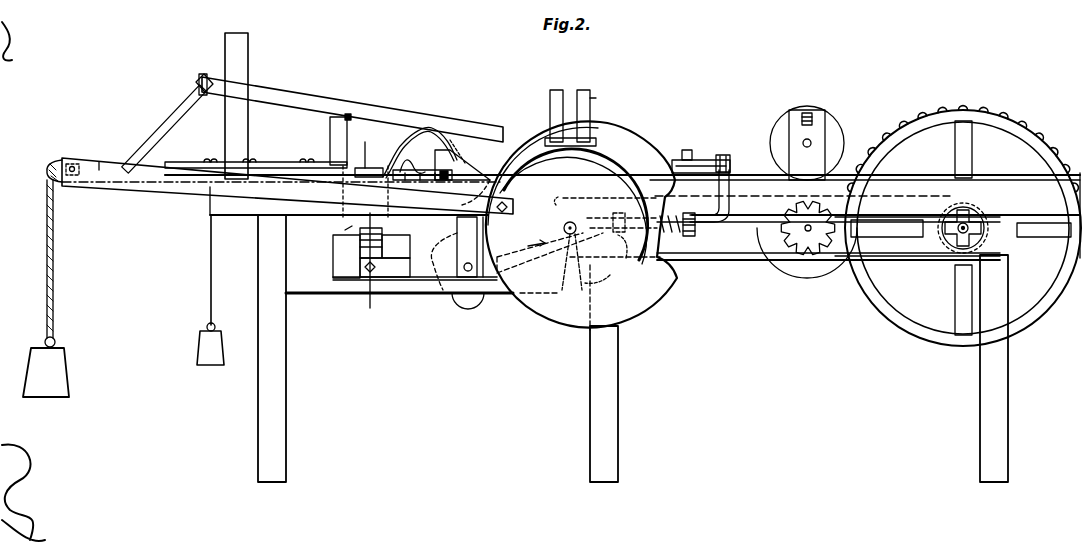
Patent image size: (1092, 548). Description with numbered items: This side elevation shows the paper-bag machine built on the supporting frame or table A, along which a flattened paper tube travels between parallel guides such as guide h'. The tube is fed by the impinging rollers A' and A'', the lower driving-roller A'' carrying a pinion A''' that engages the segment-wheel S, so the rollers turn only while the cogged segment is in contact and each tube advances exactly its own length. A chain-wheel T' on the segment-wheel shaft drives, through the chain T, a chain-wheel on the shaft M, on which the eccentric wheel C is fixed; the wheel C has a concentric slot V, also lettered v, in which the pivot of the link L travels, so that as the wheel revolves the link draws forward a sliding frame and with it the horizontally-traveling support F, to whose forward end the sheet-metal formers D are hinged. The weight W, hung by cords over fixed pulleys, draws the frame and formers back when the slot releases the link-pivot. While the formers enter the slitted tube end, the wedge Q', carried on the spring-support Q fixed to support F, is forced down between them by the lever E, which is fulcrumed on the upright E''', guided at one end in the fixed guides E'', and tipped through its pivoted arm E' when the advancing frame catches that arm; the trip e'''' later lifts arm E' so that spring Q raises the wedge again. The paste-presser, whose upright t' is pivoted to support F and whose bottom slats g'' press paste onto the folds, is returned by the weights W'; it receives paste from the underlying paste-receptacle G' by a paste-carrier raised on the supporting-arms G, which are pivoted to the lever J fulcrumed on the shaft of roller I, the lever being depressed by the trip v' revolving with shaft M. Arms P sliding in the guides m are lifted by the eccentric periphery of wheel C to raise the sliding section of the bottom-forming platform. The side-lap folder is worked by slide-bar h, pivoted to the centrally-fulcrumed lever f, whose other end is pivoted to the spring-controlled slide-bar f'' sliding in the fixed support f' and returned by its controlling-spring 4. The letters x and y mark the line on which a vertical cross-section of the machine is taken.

The supporting frame or table A is at (571, 327).
The traveling support F is at (107, 184).
The pivoted link L is at (99, 157).
The weight W is at (46, 288).
The weights W' is at (210, 290).
The pivoted arm E' is at (167, 123).
The superimposed lever E is at (351, 108).
The fixed guides E'' is at (236, 106).
The upright E''' is at (330, 139).
The trip e'''' is at (256, 155).
The section line point x is at (365, 172).
The upright of paste-presser t' is at (403, 184).
The spring-support Q is at (418, 152).
The wedge Q' is at (459, 148).
The former D is at (466, 168).
The paste-receptacle G' is at (360, 256).
The supporting-arms G is at (382, 241).
The slats g'' is at (338, 227).
The lever J is at (415, 269).
The section line point y is at (363, 278).
The impinging roller I is at (456, 234).
The eccentric wheel C is at (581, 238).
The shaft M is at (558, 209).
The concentric slot V is at (603, 158).
The trip v' is at (528, 239).
The concentric slot v is at (564, 239).
The arms P is at (570, 118).
The uprights or guides m is at (601, 96).
The controlling-spring 4 is at (670, 233).
The fixed support f' is at (690, 233).
The spring-controlled slide-bar f'' is at (719, 201).
The slide-bar h is at (701, 156).
The centrally-fulcrumed lever f is at (733, 162).
The guide h' is at (802, 173).
The upper impinging roller A' is at (821, 142).
The pinion A''' is at (807, 227).
The driving-roller A'' is at (807, 265).
The segment-wheel S is at (960, 110).
The chain-wheel T' is at (967, 222).
The chain T is at (917, 249).